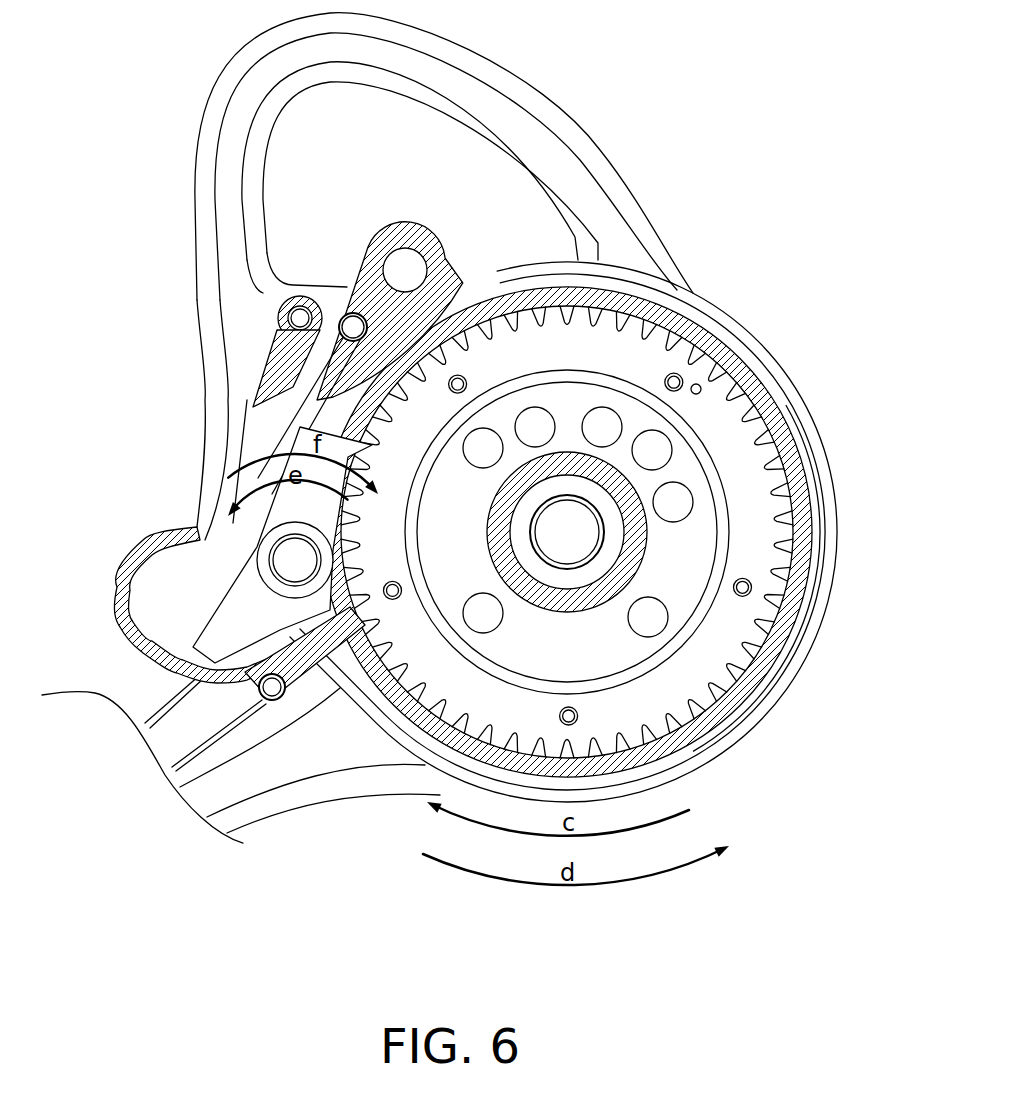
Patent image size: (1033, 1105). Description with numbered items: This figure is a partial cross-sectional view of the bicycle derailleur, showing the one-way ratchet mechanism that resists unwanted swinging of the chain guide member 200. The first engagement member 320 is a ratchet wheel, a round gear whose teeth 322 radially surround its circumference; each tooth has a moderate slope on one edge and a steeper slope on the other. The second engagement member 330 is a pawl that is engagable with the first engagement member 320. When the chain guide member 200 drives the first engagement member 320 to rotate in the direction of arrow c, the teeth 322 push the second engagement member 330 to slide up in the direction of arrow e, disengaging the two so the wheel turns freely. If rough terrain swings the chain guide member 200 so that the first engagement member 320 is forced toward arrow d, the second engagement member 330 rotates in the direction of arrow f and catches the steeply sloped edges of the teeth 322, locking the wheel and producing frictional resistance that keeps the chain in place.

The chain guide member 200 is at (283, 782).
The first engagement member 320 is at (755, 472).
The teeth 322 is at (783, 593).
The second engagement member 330 is at (280, 512).